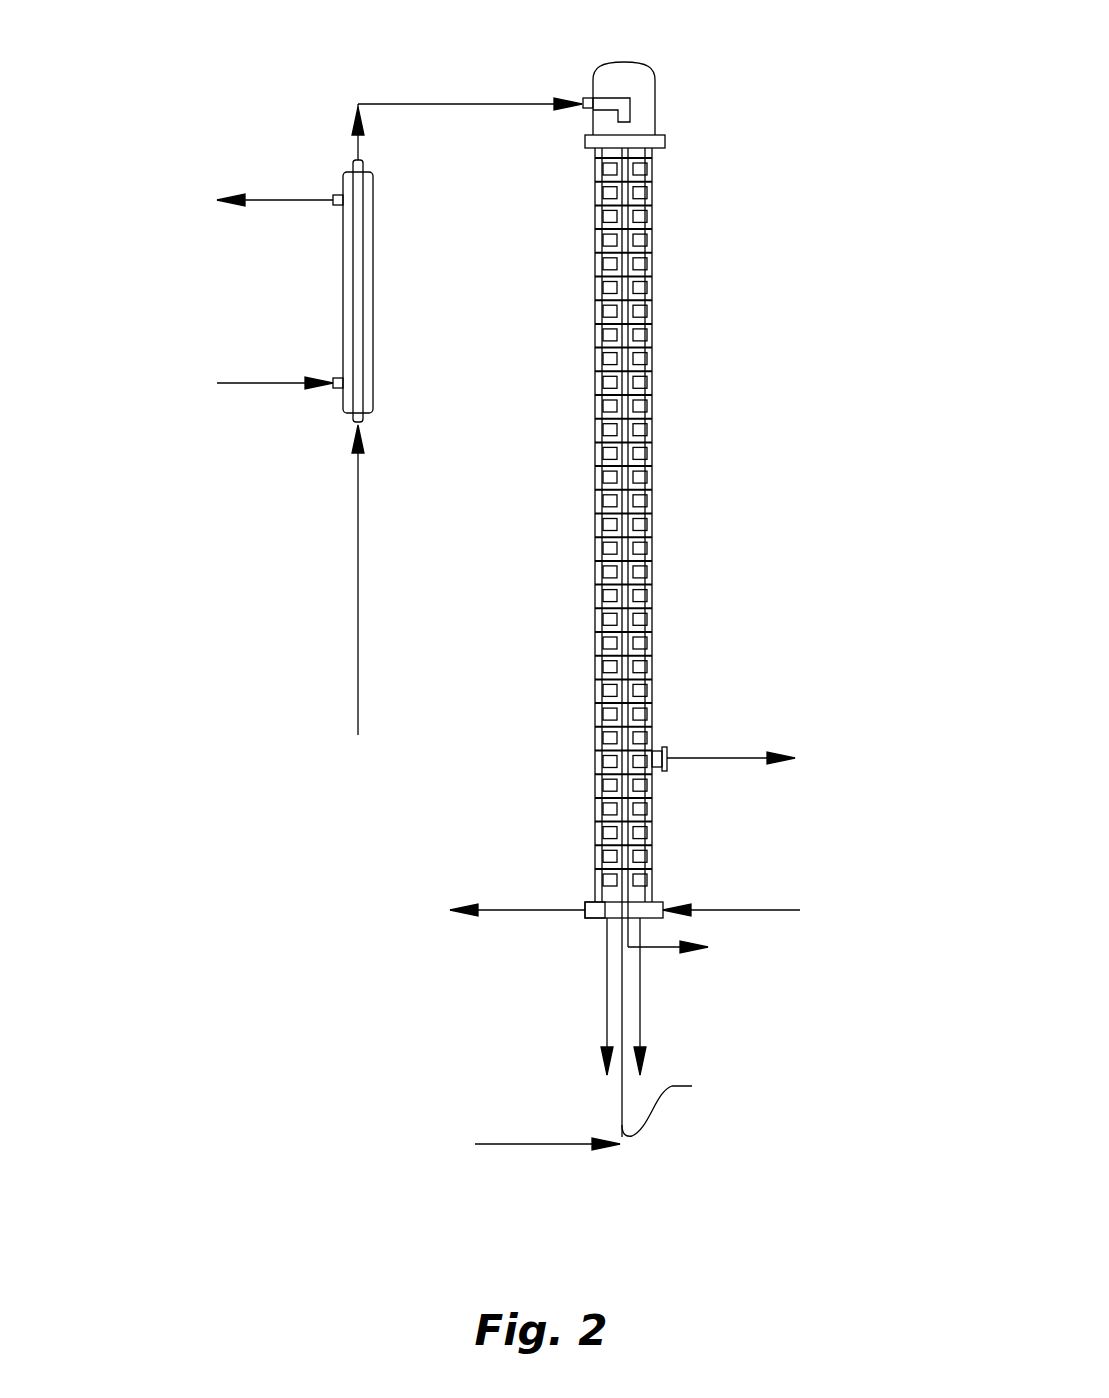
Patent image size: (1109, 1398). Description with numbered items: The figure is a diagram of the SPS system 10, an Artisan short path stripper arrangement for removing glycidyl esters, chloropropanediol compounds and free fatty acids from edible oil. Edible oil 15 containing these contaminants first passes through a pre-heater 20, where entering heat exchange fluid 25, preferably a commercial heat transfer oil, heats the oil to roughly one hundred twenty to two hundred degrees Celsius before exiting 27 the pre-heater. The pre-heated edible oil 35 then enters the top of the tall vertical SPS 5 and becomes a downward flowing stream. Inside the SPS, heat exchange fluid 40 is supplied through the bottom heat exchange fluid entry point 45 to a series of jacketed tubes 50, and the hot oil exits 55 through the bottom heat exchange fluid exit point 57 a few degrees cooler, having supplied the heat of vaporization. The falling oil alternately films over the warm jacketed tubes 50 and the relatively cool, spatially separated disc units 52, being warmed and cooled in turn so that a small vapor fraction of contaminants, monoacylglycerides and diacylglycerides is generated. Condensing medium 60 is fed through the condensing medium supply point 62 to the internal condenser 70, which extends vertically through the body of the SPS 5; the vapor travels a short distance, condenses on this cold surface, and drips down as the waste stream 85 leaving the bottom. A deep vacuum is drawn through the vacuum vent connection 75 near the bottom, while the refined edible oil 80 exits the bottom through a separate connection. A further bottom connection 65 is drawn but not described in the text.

The SPS 5 is at (516, 40).
The SPS system 10 is at (621, 609).
The edible oil 15 is at (361, 595).
The pre-heater 20 is at (400, 230).
The entering heat exchange fluid 25 is at (275, 373).
The exiting heat exchange fluid 27 is at (275, 189).
The pre-heated edible oil 35 is at (491, 120).
The heat exchange fluid 40 is at (750, 912).
The bottom heat exchange fluid entry point 45 is at (657, 908).
The jacketed tubes 50 is at (598, 470).
The disc units 52 is at (643, 557).
The exiting hot oil 55 is at (495, 910).
The bottom heat exchange fluid exit point 57 is at (587, 910).
The condensing medium 60 is at (528, 1144).
The condensing medium supply point 62 is at (675, 1107).
The side outlet stream 65 is at (689, 947).
The internal condenser 70 is at (623, 237).
The vacuum vent connection 75 is at (723, 751).
The refined edible oil 80 is at (654, 996).
The waste stream 85 is at (591, 996).